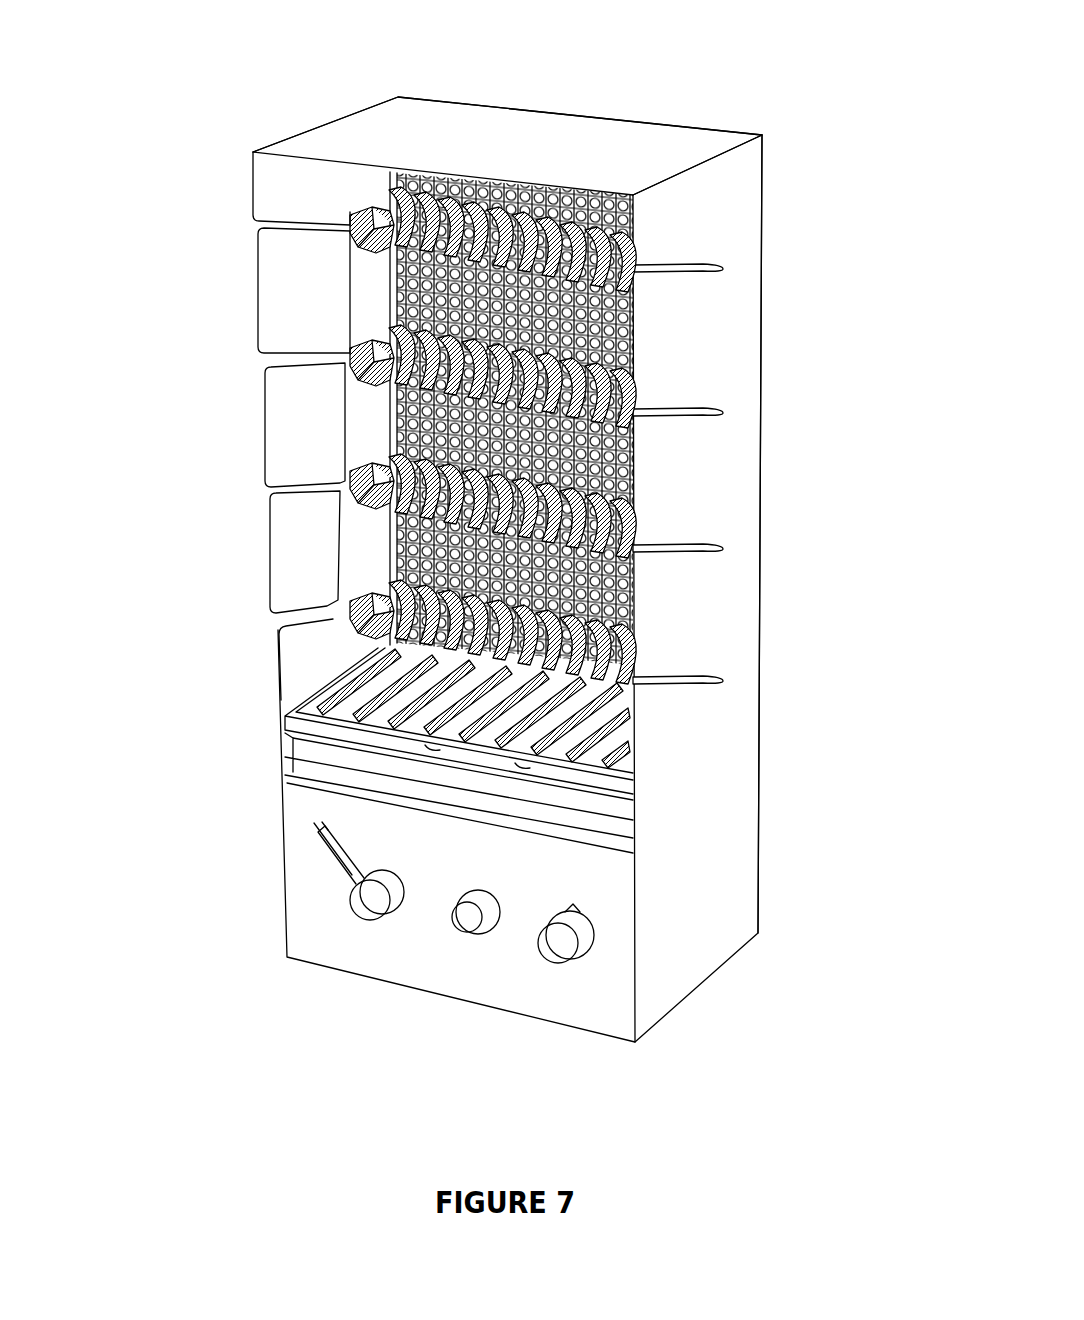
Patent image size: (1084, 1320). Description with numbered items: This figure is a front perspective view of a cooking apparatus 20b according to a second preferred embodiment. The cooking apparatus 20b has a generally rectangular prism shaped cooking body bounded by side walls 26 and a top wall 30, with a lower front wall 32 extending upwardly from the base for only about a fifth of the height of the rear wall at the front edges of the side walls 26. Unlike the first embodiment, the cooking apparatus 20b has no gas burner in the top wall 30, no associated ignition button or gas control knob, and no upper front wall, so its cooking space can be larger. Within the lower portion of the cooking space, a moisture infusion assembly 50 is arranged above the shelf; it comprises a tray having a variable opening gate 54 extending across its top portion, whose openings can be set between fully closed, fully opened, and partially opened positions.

The cooking apparatus 20b is at (815, 104).
The top wall 30 is at (574, 138).
The side walls 26 is at (285, 430).
The variable opening gate 54 is at (320, 680).
The moisture infusion assembly 50 is at (258, 745).
The lower front wall 32 is at (365, 935).